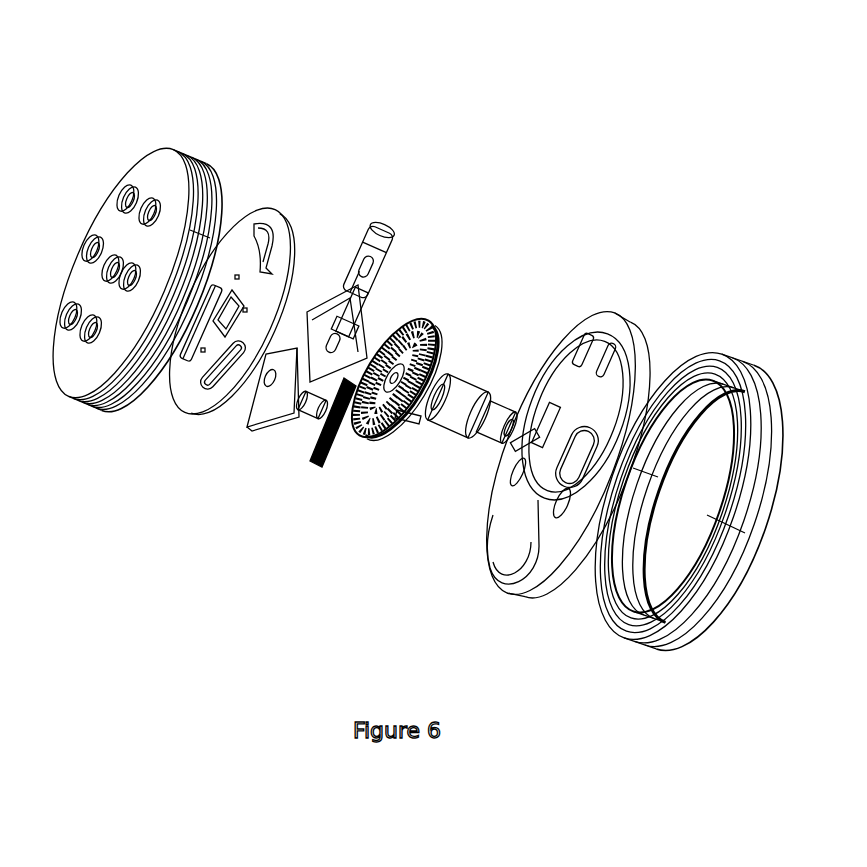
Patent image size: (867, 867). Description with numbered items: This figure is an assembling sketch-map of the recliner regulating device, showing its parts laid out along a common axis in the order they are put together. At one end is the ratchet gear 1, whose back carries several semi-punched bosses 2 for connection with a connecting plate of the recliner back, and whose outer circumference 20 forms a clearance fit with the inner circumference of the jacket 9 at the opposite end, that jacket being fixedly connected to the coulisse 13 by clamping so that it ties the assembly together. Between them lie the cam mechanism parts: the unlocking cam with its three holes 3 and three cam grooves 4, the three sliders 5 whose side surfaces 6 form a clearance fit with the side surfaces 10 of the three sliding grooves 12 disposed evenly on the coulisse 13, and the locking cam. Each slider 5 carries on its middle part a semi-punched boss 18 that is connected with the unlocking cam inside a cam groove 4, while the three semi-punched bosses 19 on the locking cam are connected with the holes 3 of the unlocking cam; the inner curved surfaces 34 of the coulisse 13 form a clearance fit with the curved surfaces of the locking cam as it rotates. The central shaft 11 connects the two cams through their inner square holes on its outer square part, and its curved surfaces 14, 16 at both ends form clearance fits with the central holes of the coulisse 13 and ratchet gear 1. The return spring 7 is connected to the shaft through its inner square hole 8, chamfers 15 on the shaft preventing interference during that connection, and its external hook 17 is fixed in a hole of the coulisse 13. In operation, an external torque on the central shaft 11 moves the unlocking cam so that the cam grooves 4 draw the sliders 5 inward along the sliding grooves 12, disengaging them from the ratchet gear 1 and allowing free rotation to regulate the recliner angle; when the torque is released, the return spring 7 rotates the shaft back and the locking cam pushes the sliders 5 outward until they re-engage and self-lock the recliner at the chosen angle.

The ratchet gear 1 is at (150, 185).
The semi-punched bosses 2 is at (148, 208).
The holes 3 is at (228, 270).
The cam grooves 4 is at (267, 232).
The sliders 5 is at (368, 245).
The side surfaces of the sliders 6 is at (378, 270).
The return spring 7 is at (418, 323).
The inner square hole 8 is at (435, 339).
The jacket 9 is at (753, 360).
The side surfaces of the sliding grooves 10 is at (578, 362).
The central shaft 11 is at (477, 402).
The sliding grooves 12 is at (550, 535).
The coulisse 13 is at (502, 535).
The curved surface 14 is at (495, 432).
The chamfers 15 is at (485, 420).
The curved surface 16 is at (457, 403).
The external hook 17 is at (413, 417).
The semi-punched boss 18 is at (310, 420).
The semi-punched bosses 19 is at (260, 423).
The outer circumference of the ratchet gear 20 is at (143, 357).
The inner curved surfaces of the coulisse 34 is at (548, 407).